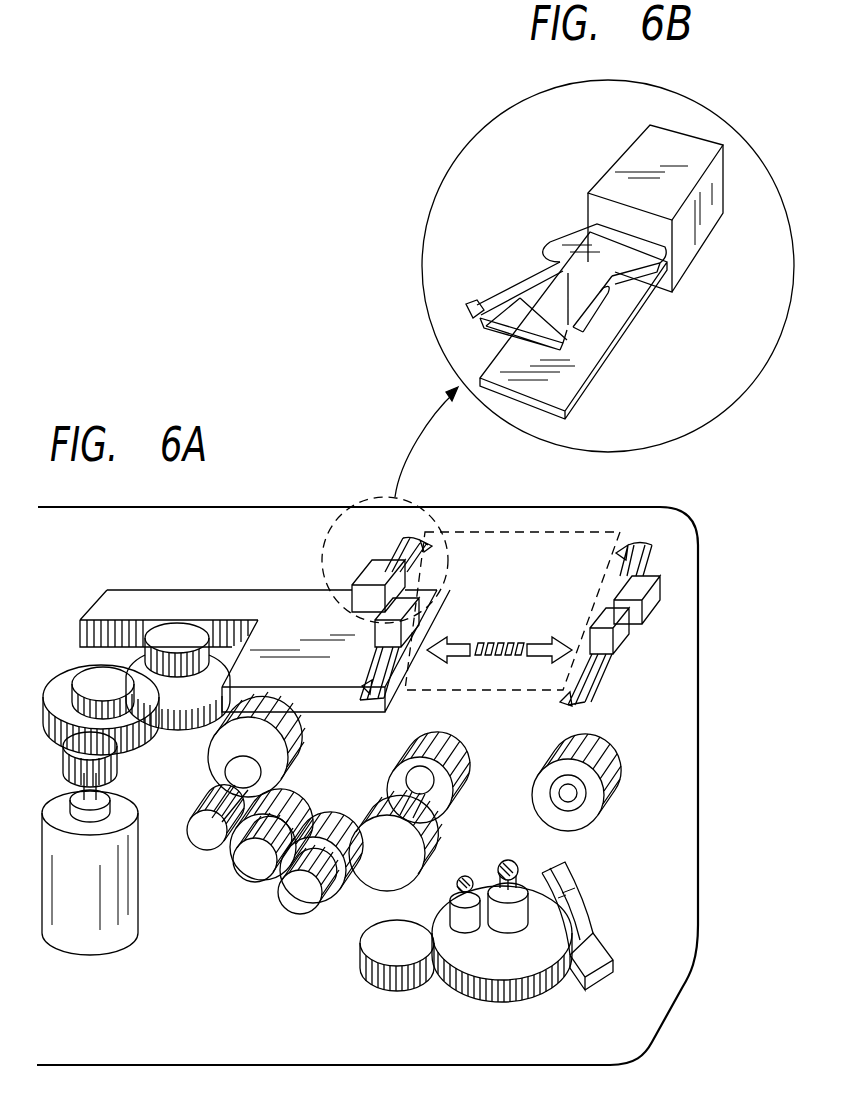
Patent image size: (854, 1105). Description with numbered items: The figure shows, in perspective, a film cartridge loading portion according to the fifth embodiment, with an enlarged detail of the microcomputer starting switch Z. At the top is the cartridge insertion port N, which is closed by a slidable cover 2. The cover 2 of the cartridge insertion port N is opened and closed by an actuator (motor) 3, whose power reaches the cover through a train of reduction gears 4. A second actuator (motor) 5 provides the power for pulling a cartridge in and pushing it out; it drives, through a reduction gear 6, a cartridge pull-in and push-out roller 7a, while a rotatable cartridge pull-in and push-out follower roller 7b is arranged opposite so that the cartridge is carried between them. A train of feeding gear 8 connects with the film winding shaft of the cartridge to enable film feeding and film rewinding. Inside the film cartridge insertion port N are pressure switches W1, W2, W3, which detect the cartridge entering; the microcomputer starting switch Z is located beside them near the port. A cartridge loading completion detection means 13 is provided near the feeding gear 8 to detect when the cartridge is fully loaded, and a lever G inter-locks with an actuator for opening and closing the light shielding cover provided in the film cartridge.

In FIG. 6A, the slidable cover 2 is at (165, 598).
In FIG. 6A, the actuator (motor) 3 is at (87, 935).
In FIG. 6A, the train of reduction gears 4 is at (55, 700).
In FIG. 6A, the actuator (motor) 5 is at (215, 762).
In FIG. 6A, the reduction gear 6 is at (297, 900).
In FIG. 6A, the cartridge pull-in and push-out roller 7a is at (407, 862).
In FIG. 6A, the cartridge pull-in and push-out follower roller 7b is at (591, 811).
In FIG. 6A, the train of feeding gear 8 is at (500, 958).
In FIG. 6A, the cartridge loading completion detection means 13 is at (578, 897).
In FIG. 6A, the lever G is at (467, 945).
In FIG. 6A, the cartridge insertion port N is at (565, 532).
In FIG. 6A, the pressure switch W1 is at (622, 550).
In FIG. 6A, the pressure switch W2 is at (605, 688).
In FIG. 6A, the pressure switch W3 is at (364, 664).
In FIG. 6B, the microcomputer starting switch Z is at (527, 320).
In FIG. 6A, the microcomputer starting switch Z is at (440, 545).